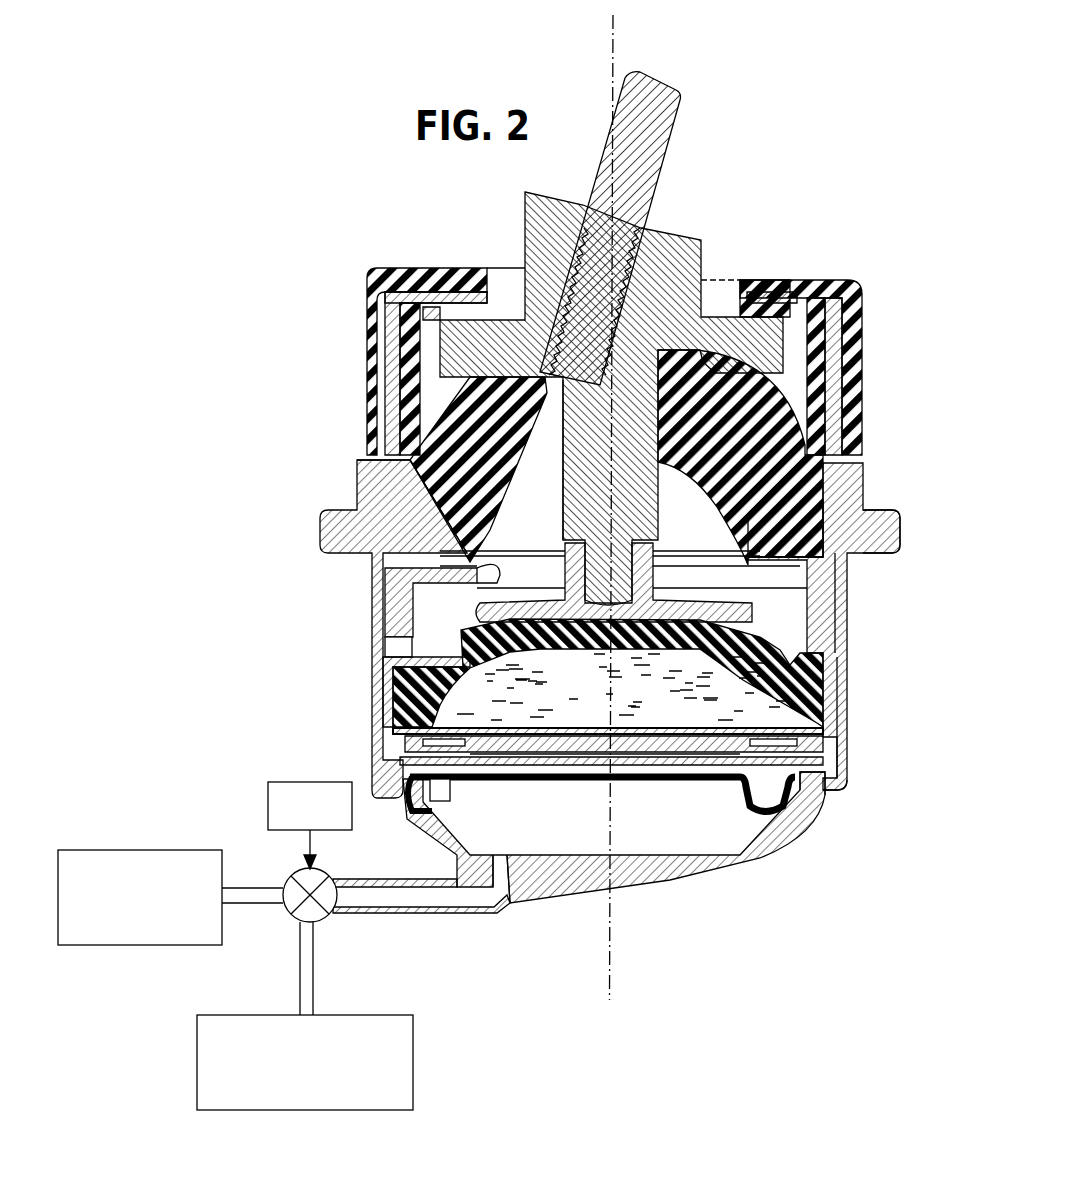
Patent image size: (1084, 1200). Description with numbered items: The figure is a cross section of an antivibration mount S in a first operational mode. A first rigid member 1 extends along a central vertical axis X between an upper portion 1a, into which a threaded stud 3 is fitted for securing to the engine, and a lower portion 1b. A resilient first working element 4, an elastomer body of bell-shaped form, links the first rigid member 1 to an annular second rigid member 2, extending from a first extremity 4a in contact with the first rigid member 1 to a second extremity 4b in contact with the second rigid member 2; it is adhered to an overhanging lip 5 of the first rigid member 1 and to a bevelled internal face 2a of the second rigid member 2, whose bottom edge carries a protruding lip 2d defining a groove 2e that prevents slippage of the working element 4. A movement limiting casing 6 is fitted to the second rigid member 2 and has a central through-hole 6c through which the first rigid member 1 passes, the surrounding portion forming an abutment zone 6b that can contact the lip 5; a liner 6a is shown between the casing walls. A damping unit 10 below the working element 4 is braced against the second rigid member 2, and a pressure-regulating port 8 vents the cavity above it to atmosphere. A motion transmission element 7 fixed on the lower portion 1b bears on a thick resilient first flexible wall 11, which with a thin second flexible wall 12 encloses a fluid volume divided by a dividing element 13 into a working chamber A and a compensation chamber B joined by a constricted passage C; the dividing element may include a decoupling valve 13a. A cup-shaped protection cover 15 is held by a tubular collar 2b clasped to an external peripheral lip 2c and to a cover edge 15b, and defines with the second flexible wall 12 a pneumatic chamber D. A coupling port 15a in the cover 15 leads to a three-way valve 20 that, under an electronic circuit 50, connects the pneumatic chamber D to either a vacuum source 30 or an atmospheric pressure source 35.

The first rigid member 1 is at (541, 381).
The upper portion 1a is at (656, 228).
The lower portion 1b is at (560, 470).
The second rigid member 2 is at (609, 624).
The bevelled internal face 2a is at (423, 487).
The tubular collar 2b is at (849, 613).
The external peripheral lip 2c is at (873, 517).
The protruding lip 2d is at (423, 597).
The groove 2e is at (400, 565).
The threaded stud 3 is at (658, 92).
The resilient first working element 4 is at (654, 384).
The first extremity 4a is at (492, 362).
The second extremity 4b is at (787, 493).
The overhanging lip 5 is at (763, 353).
The movement limiting casing 6 is at (645, 334).
The liner 6a is at (828, 395).
The abutment zone 6b is at (760, 300).
The central through-hole 6c is at (718, 292).
The motion transmission element 7 is at (487, 613).
The pressure-regulating port 8 is at (398, 648).
The damping unit 10 is at (800, 660).
The first flexible wall 11 is at (378, 713).
The second flexible wall 12 is at (765, 807).
The dividing element 13 is at (654, 827).
The decoupling valve 13a is at (530, 745).
The protection cover 15 is at (601, 864).
The coupling port 15a is at (499, 866).
The edge 15b is at (812, 792).
The three-way valve 20 is at (325, 915).
The vacuum source 30 is at (140, 945).
The atmospheric pressure source 35 is at (416, 1068).
The electronic circuit 50 is at (266, 806).
The working chamber A is at (625, 687).
The compensation chamber B is at (440, 789).
The constricted passage C is at (838, 784).
The pneumatic chamber D is at (672, 830).
The antivibration mount S is at (768, 127).
The central axis X is at (607, 55).